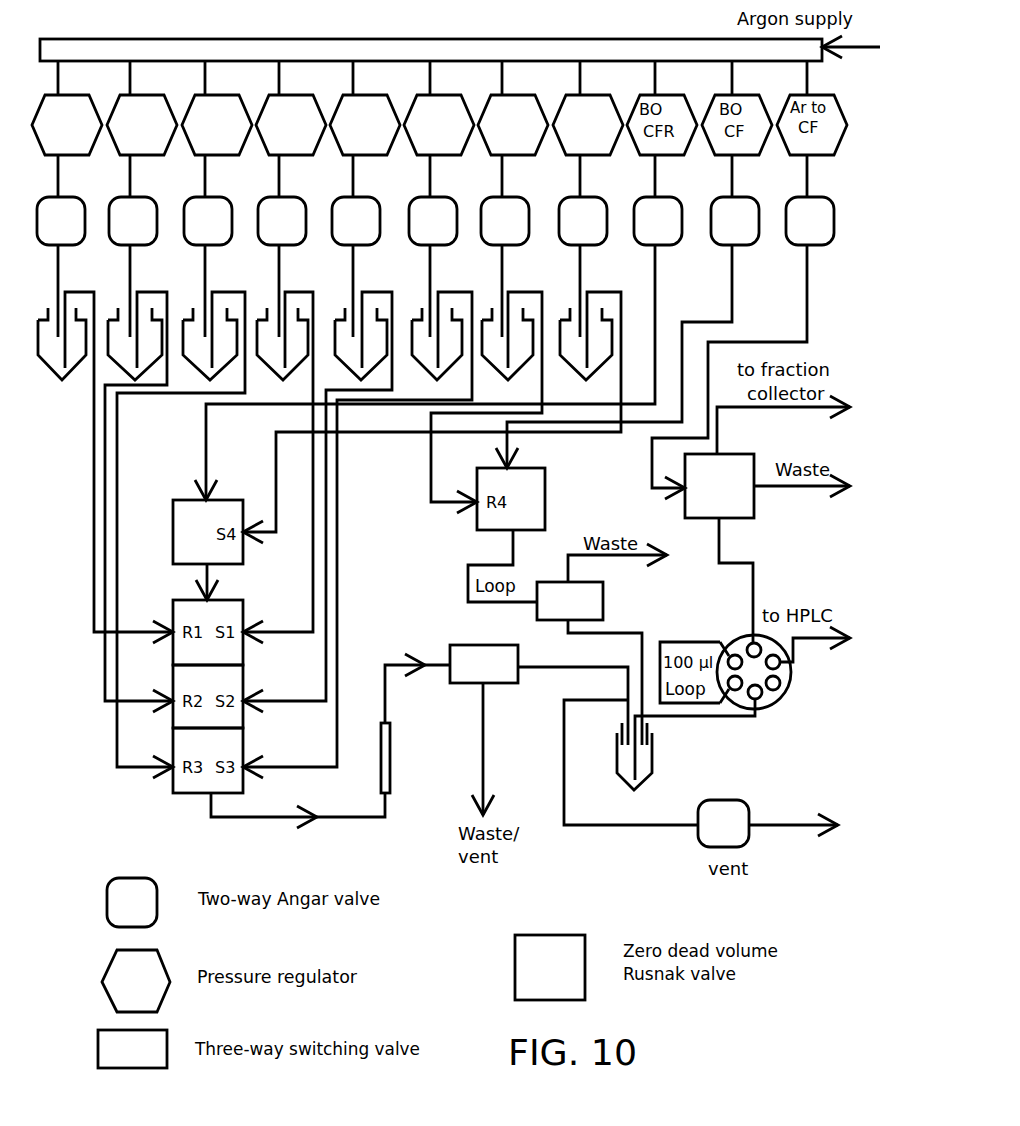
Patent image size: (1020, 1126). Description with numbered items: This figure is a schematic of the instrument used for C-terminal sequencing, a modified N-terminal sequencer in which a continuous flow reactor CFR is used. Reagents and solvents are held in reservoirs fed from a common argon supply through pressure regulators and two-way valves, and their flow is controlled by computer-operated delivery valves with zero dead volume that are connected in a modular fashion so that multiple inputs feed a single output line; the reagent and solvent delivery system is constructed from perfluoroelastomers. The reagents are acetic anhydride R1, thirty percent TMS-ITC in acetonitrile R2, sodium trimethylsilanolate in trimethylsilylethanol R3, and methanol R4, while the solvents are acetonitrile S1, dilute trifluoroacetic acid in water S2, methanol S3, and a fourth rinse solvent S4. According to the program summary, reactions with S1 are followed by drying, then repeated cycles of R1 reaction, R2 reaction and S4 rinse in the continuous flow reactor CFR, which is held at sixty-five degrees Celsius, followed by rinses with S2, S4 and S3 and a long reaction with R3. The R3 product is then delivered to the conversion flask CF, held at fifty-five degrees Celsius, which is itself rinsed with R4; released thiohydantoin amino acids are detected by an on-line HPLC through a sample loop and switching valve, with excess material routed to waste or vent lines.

The acetic anhydride reagent R1 is at (67, 125).
The TMS-ITC reagent R2 is at (142, 125).
The sodium trimethylsilanolate reagent R3 is at (217, 125).
The acetonitrile solvent S1 is at (291, 125).
The trifluoroacetic acid solvent S2 is at (365, 125).
The methanol solvent S3 is at (439, 125).
The methanol rinse reagent R4 is at (513, 125).
The fourth solvent S4 is at (588, 125).
The continuous flow reactor CFR is at (405, 758).
The conversion flask CF is at (620, 756).